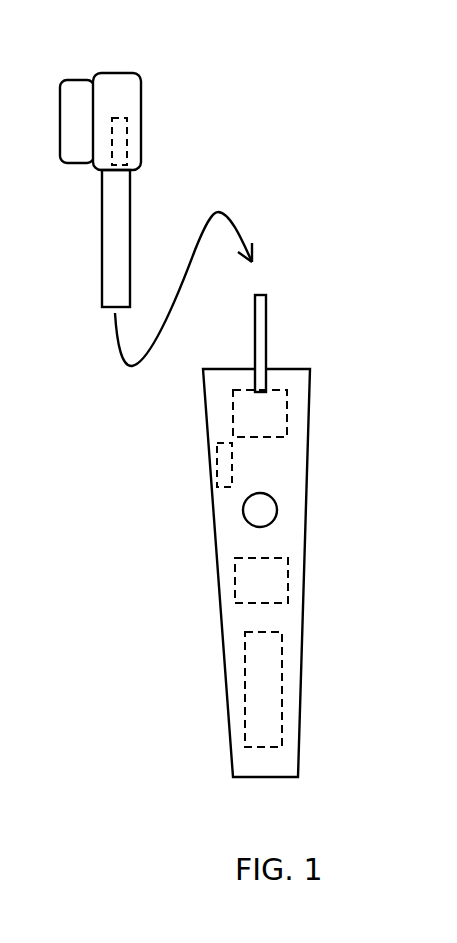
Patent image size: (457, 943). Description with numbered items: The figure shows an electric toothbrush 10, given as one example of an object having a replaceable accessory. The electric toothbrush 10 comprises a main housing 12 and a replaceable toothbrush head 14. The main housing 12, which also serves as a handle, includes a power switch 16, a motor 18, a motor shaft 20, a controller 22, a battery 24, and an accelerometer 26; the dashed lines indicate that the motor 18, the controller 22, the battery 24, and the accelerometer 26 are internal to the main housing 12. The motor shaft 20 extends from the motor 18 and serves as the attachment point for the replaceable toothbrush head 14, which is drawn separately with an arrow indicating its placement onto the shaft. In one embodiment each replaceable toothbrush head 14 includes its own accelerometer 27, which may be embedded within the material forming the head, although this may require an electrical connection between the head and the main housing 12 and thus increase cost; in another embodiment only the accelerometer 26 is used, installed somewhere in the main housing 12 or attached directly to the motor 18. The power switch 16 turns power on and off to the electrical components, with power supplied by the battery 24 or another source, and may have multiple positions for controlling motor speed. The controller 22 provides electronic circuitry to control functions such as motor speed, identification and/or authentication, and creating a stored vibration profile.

The electric toothbrush 10 is at (434, 620).
The main housing 12 is at (222, 630).
The replaceable toothbrush head 14 is at (142, 90).
The power switch 16 is at (270, 496).
The motor 18 is at (287, 422).
The motor shaft 20 is at (266, 337).
The controller 22 is at (288, 582).
The battery 24 is at (282, 682).
The accelerometer 26 is at (217, 453).
The accelerometer 27 is at (127, 128).